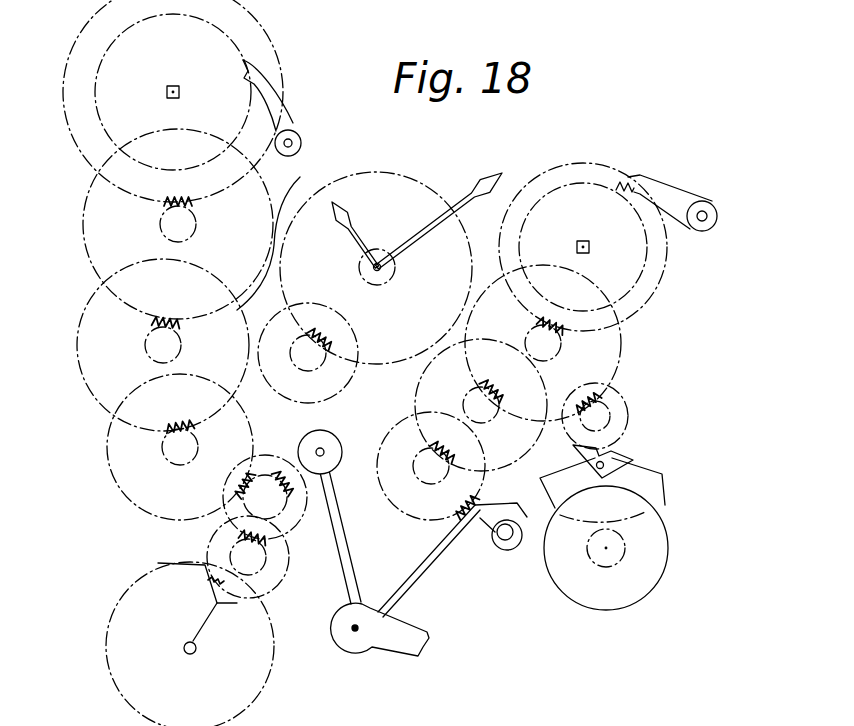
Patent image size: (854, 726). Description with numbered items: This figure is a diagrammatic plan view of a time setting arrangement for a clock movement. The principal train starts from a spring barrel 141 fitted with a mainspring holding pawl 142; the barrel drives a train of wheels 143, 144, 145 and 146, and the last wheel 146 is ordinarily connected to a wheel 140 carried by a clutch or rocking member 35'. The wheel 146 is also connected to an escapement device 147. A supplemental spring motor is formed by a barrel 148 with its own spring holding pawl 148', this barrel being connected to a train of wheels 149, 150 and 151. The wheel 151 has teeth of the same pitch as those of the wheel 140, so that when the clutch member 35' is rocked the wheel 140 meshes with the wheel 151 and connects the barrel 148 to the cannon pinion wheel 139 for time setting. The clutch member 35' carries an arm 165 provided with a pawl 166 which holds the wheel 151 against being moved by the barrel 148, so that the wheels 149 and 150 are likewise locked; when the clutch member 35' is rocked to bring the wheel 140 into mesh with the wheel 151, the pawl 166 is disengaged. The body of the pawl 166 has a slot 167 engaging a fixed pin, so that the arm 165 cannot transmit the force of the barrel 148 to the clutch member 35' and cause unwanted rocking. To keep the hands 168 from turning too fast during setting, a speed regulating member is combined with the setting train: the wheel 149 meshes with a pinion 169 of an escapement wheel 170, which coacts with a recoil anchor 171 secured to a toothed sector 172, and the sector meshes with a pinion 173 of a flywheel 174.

The clutch or rocking member 35' is at (386, 623).
The cannon pinion wheel 139 is at (405, 176).
The wheel 140 is at (338, 498).
The spring barrel 141 is at (258, 20).
The mainspring holding pawl 142 is at (283, 120).
The wheel 143 is at (258, 185).
The wheel 144 is at (98, 397).
The wheel 145 is at (148, 513).
The wheel 146 is at (284, 518).
The escapement device 147 is at (202, 630).
The barrel 148 is at (583, 234).
The spring holding pawl 148' is at (680, 198).
The wheel 149 is at (614, 370).
The wheel 150 is at (543, 428).
The wheel 151 is at (432, 526).
The arm 165 is at (418, 577).
The pawl 166 is at (493, 504).
The slot 167 is at (511, 550).
The hands 168 is at (407, 244).
The pinion 169 is at (605, 406).
The escapement wheel 170 is at (628, 418).
The recoil anchor 171 is at (632, 460).
The toothed sector 172 is at (650, 488).
The pinion 173 is at (622, 553).
The flywheel 174 is at (648, 596).